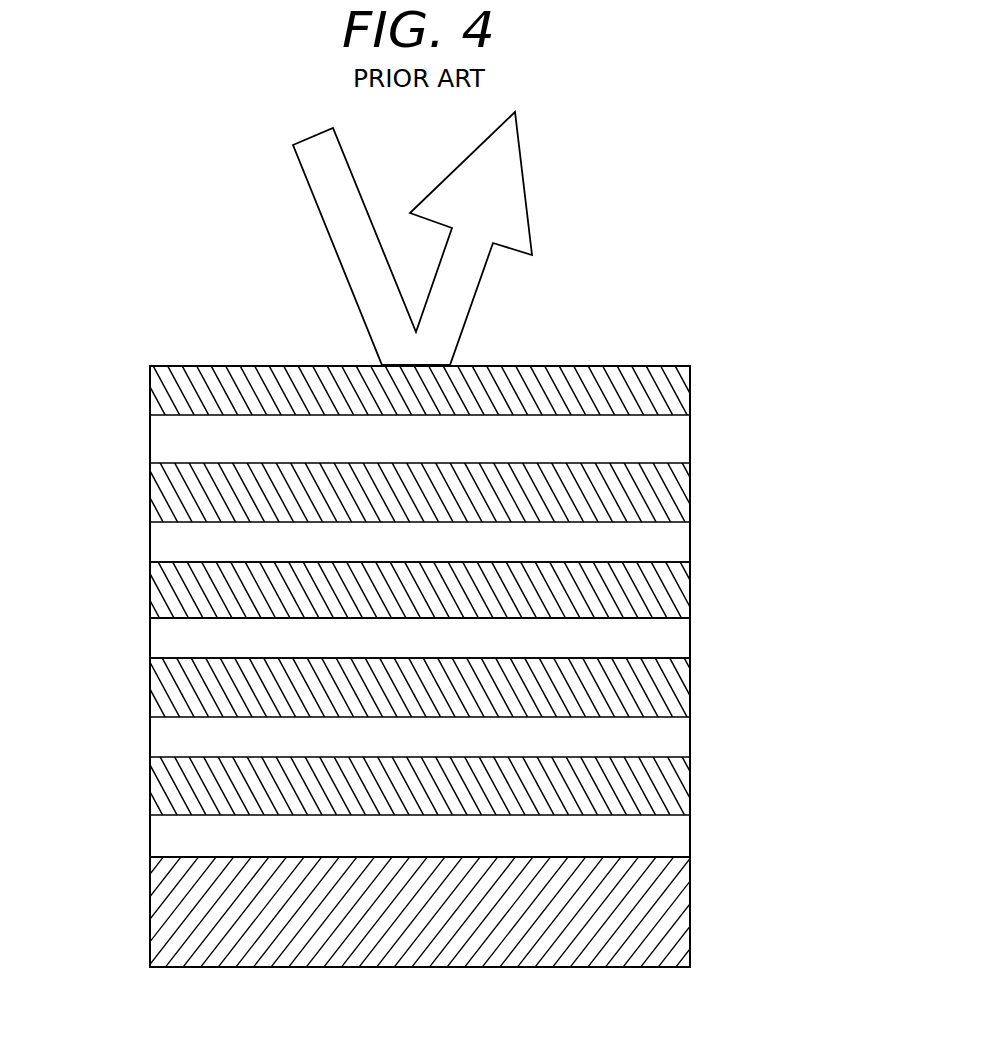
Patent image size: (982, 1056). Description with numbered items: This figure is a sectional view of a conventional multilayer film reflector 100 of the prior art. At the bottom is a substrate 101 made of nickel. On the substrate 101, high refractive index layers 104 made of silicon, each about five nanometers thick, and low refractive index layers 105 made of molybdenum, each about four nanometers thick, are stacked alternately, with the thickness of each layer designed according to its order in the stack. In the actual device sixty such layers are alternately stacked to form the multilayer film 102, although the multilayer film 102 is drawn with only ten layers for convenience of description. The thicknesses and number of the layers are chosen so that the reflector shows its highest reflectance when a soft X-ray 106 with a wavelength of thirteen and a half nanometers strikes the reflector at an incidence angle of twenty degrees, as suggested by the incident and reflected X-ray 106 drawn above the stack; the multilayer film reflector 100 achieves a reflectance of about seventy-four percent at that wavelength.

The multilayer film reflector 100 is at (745, 394).
The substrate 101 is at (645, 925).
The multilayer film 102 is at (120, 854).
The high refractive index layer 104 is at (675, 647).
The low refractive index layer 105 is at (675, 590).
The X-ray 106 is at (500, 207).